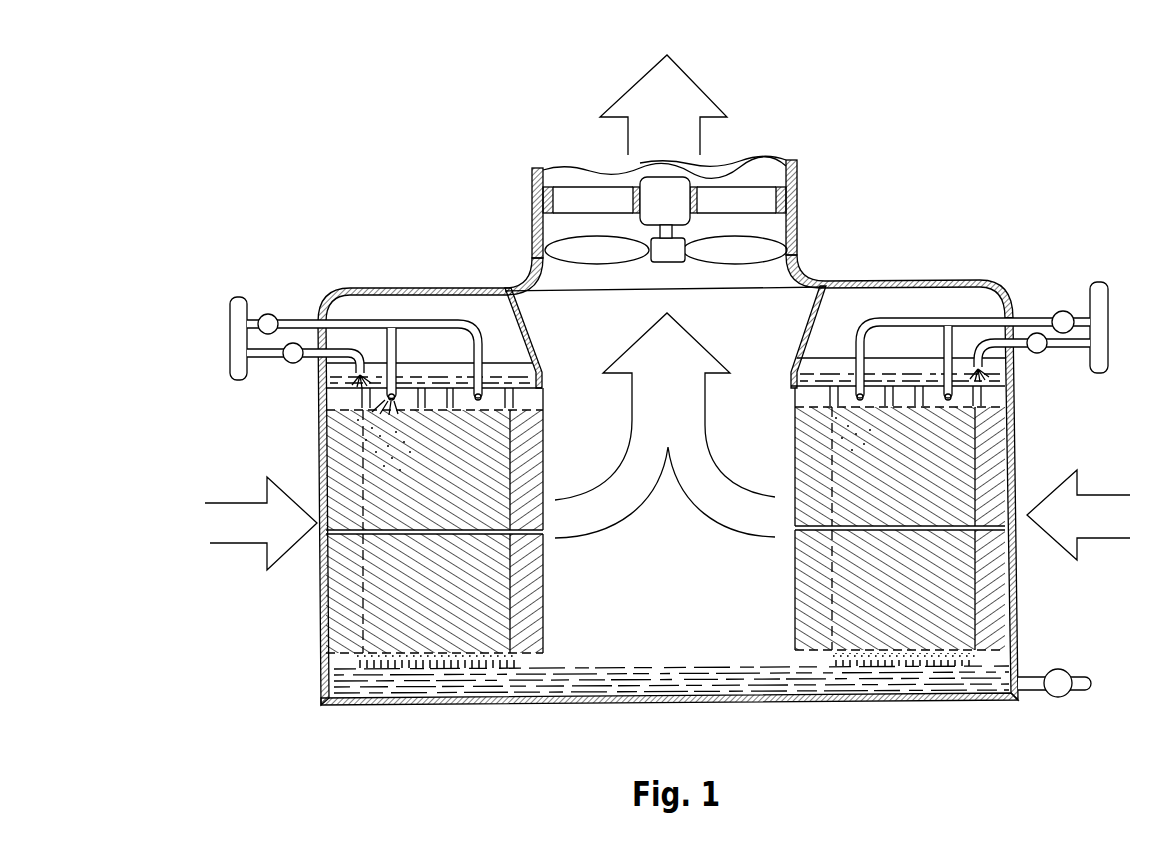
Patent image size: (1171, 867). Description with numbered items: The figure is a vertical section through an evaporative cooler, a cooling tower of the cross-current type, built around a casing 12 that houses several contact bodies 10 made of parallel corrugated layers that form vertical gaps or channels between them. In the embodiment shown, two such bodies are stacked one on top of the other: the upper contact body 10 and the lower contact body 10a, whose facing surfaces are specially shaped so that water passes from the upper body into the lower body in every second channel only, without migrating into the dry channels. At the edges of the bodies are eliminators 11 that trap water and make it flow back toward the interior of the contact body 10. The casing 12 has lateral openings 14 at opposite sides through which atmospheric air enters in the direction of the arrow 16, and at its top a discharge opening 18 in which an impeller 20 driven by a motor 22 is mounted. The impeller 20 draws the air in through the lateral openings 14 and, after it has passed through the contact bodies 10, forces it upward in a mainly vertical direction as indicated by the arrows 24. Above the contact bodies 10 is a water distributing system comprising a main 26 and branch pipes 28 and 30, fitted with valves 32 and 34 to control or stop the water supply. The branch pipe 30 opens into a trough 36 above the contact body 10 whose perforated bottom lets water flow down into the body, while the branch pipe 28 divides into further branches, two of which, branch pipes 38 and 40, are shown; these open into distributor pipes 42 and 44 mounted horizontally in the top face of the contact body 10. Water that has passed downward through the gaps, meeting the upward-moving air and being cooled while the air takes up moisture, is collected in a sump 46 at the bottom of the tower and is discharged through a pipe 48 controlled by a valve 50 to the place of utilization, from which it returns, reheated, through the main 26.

The contact body 10 is at (476, 465).
The lower contact body 10a is at (465, 626).
The eliminators 11 is at (528, 577).
The casing 12 is at (905, 283).
The lateral openings 14 is at (318, 620).
The arrow 16 is at (233, 540).
The discharge opening 18 is at (778, 173).
The impeller 20 is at (790, 248).
The motor 22 is at (682, 200).
The arrows 24 is at (672, 70).
The main 26 is at (230, 338).
The branch pipe 28 is at (303, 320).
The branch pipe 30 is at (255, 360).
The valve 32 is at (268, 314).
The valve 34 is at (296, 364).
The trough 36 is at (540, 387).
The branch pipe 38 is at (397, 347).
The branch pipe 40 is at (483, 353).
The distributor pipe 42 is at (392, 400).
The distributor pipe 44 is at (527, 414).
The sump 46 is at (858, 702).
The pipe 48 is at (1078, 676).
The valve 50 is at (1062, 697).